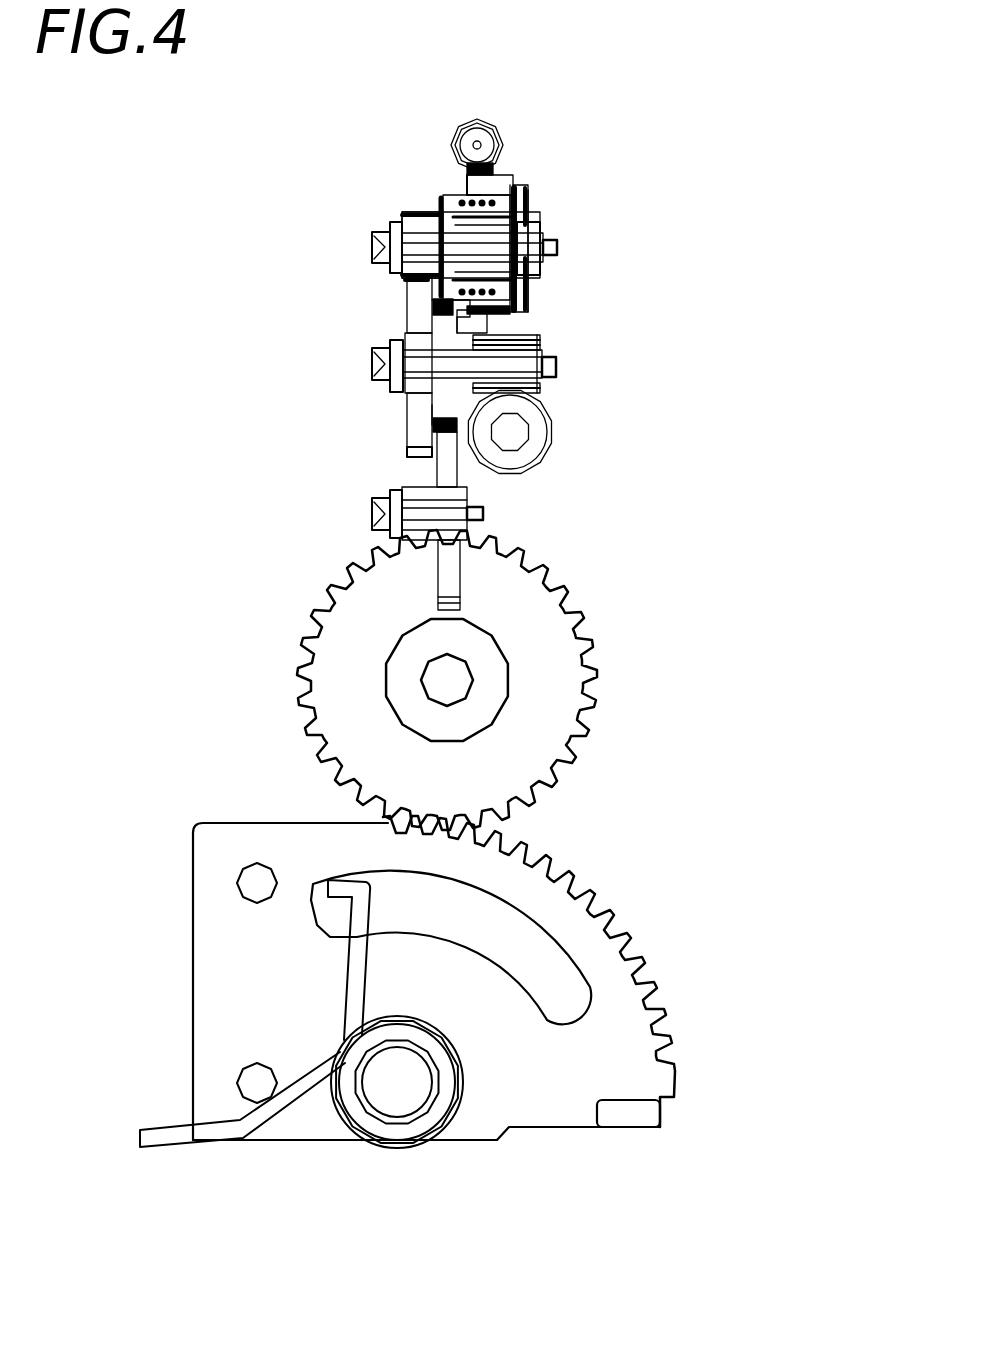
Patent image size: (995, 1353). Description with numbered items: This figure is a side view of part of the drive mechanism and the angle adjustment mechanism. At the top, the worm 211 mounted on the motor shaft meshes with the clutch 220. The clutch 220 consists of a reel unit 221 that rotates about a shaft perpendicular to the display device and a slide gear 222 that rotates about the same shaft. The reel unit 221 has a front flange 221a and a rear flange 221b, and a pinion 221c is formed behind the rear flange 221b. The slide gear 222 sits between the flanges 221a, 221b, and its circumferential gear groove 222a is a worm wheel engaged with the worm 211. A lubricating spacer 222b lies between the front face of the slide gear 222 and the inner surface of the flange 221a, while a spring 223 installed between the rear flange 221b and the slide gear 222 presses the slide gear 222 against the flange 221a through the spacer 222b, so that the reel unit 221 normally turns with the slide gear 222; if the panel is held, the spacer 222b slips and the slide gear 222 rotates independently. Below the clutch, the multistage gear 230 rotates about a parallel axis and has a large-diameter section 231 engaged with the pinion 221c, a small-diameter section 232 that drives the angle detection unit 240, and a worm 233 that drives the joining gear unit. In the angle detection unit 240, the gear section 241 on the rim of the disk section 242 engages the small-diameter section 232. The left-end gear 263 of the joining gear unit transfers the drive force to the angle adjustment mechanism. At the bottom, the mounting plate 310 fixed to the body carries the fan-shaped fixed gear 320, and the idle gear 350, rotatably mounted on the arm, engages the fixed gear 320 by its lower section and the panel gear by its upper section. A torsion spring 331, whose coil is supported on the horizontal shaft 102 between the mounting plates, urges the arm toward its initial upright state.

The horizontal shaft 102 is at (377, 1130).
The worm 211 is at (478, 117).
The clutch 220 is at (573, 243).
The reel unit 221 is at (548, 232).
The flange 221a is at (532, 215).
The flange 221b is at (445, 205).
The pinion 221c is at (413, 210).
The slide gear 222 is at (512, 178).
The gear groove 222a is at (467, 187).
The spacer 222b is at (525, 200).
The spring 223 is at (458, 197).
The multistage gear 230 is at (567, 353).
The large-diameter section 231 is at (417, 298).
The small-diameter section 232 is at (447, 417).
The worm 233 is at (537, 335).
The angle detection unit 240 is at (440, 493).
The gear section 241 is at (450, 423).
The disk section 242 is at (462, 470).
The left-end gear 263 is at (547, 458).
The mounting plate 310 is at (240, 835).
The fixed gear 320 is at (572, 902).
The torsion spring 331 is at (230, 1130).
The idle gear 350 is at (557, 665).